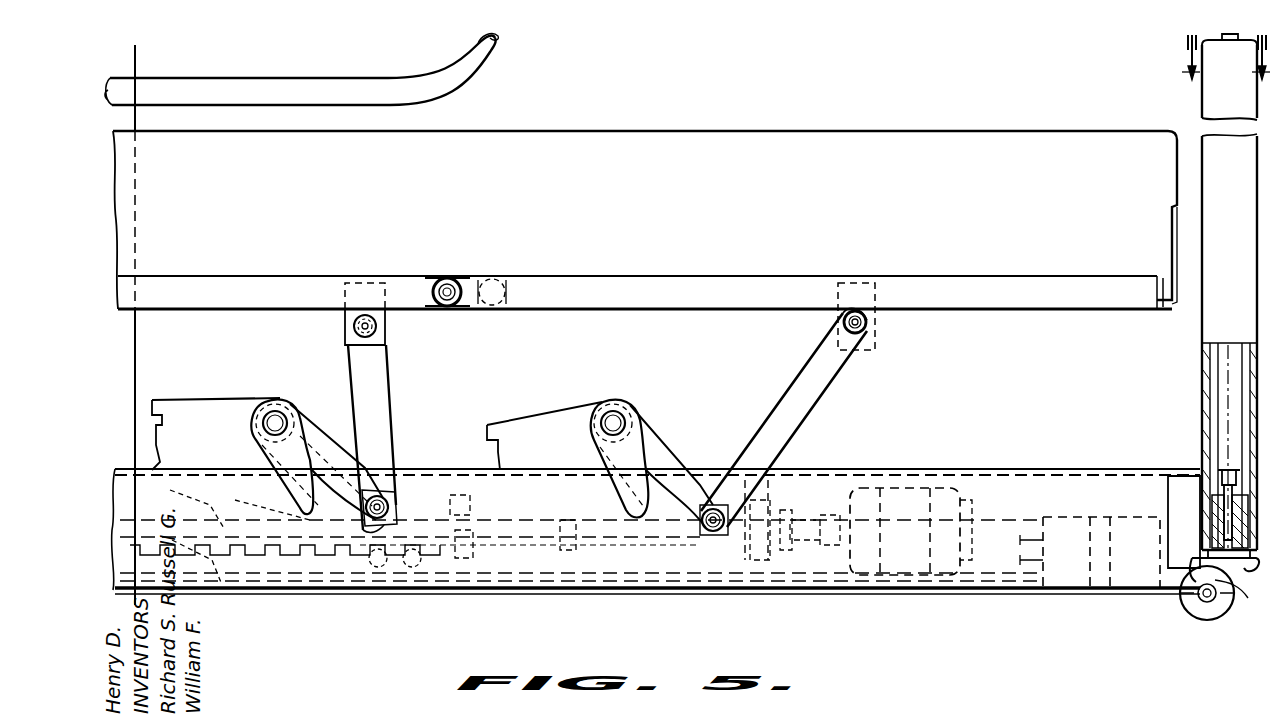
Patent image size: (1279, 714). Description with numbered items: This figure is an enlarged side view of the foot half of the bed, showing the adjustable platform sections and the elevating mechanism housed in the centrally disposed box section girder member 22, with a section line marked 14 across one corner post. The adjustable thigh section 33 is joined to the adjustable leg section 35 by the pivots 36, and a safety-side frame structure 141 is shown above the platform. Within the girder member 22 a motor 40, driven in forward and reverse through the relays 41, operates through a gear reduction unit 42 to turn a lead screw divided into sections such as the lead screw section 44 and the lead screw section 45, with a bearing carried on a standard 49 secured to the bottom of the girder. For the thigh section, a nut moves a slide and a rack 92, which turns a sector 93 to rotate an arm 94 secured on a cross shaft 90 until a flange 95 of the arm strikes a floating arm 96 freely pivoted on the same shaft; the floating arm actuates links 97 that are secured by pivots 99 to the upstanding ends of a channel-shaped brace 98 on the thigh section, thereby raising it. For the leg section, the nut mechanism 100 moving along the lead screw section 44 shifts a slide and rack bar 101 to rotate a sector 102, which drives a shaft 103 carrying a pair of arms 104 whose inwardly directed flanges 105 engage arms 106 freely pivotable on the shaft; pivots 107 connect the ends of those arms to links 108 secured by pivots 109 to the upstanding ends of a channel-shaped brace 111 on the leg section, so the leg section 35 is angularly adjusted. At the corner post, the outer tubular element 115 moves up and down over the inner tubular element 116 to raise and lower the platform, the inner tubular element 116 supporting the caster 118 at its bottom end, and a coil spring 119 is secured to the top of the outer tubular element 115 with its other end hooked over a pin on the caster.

The safety-side frame structure 141 is at (327, 70).
The adjustable thigh section 33 is at (255, 281).
The adjustable leg section 35 is at (768, 283).
The pivots 36 is at (450, 282).
The channel-shaped brace 98 is at (345, 345).
The pivots 99 is at (378, 325).
The links 97 is at (388, 358).
The floating arm 96 is at (332, 452).
The sector 93 is at (186, 410).
The cross shaft 90 is at (272, 418).
The arm 94 is at (296, 438).
The lead screw section 44 is at (412, 514).
The sector 102 is at (528, 425).
The shaft 103 is at (614, 420).
The arms 104 is at (648, 438).
The arms 106 is at (672, 472).
The inwardly directed flanges 105 is at (650, 512).
The links 108 is at (820, 390).
The pivots 109 is at (870, 325).
The channel-shaped brace 111 is at (870, 345).
The pivots 107 is at (716, 535).
The slide and rack bar 101 is at (575, 595).
The box section girder member 22 is at (985, 478).
The motor 40 is at (922, 470).
The relays 41 is at (1072, 492).
The gear reduction unit 42 is at (736, 470).
The lead screw section 45 is at (192, 480).
The flange 95 is at (300, 504).
The rack 92 is at (218, 580).
The standard 49 is at (340, 590).
The nut mechanism 100 is at (445, 468).
The outer tubular element 115 is at (1200, 196).
The inner tubular element 116 is at (1212, 376).
The coil spring 119 is at (1226, 470).
The caster 118 is at (1210, 545).
The section line 14- 14 is at (1252, 94).